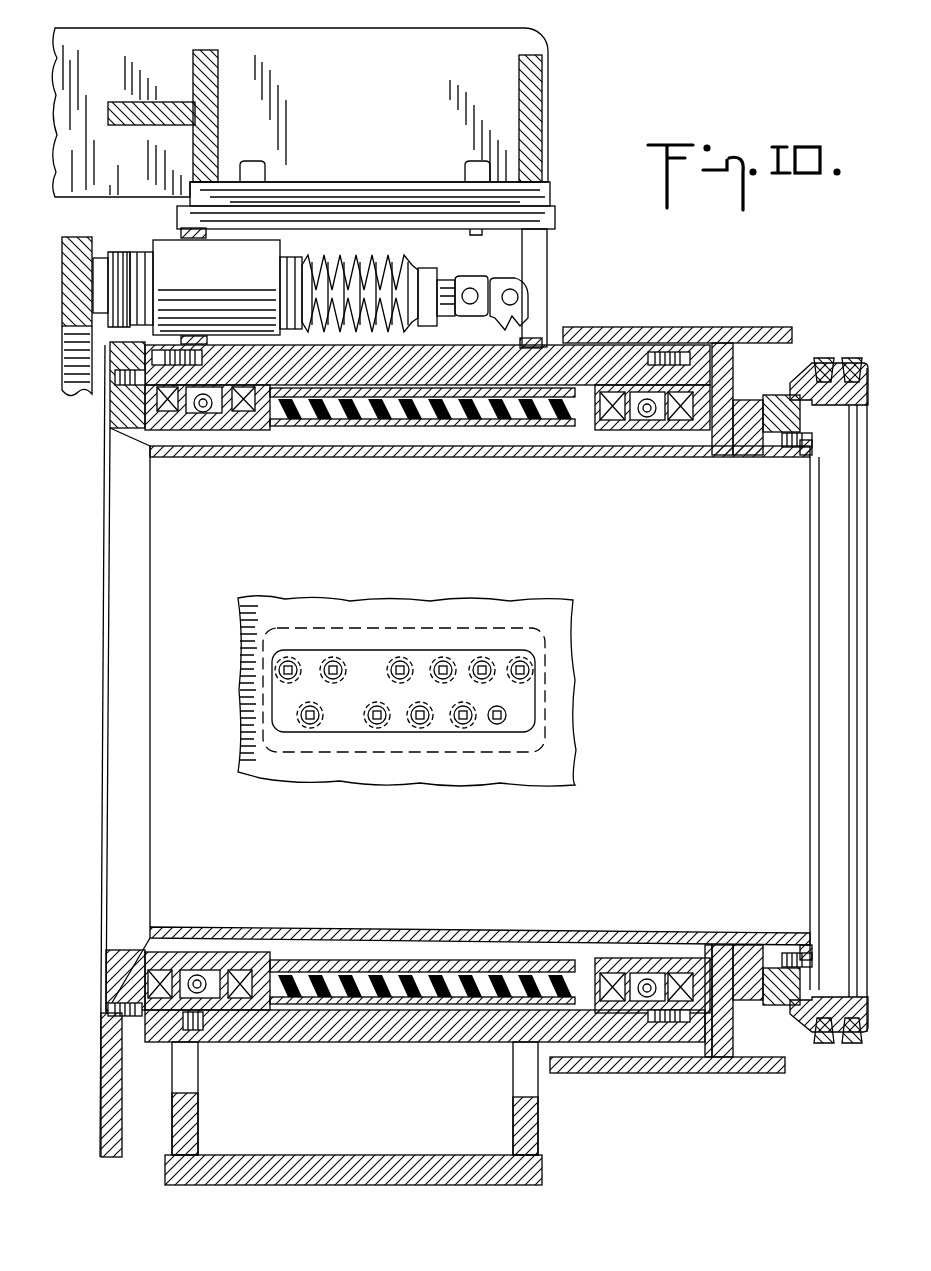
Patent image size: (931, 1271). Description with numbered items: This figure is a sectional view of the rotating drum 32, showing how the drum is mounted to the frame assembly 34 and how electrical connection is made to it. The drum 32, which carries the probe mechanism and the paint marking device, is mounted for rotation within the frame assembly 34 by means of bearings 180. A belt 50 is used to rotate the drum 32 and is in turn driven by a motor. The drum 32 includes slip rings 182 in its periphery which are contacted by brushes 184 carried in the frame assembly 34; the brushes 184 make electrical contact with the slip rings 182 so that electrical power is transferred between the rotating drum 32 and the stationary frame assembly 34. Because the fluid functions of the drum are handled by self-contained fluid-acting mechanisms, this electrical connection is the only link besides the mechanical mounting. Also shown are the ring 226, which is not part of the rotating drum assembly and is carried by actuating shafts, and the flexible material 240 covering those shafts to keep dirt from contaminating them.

The drum 32 is at (688, 459).
The frame assembly 34 is at (563, 281).
The belt 50 is at (852, 362).
The bearings 180 is at (204, 414).
The slip rings 182 is at (440, 425).
The brushes 184 is at (520, 665).
The ring 226 is at (68, 352).
The flexible material 240 is at (360, 255).